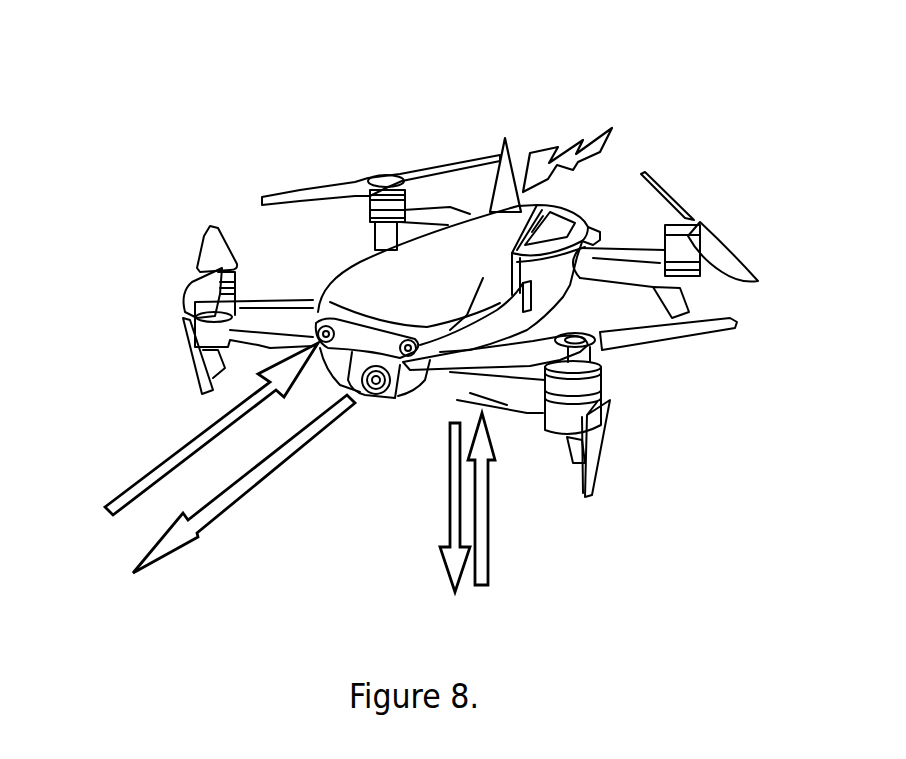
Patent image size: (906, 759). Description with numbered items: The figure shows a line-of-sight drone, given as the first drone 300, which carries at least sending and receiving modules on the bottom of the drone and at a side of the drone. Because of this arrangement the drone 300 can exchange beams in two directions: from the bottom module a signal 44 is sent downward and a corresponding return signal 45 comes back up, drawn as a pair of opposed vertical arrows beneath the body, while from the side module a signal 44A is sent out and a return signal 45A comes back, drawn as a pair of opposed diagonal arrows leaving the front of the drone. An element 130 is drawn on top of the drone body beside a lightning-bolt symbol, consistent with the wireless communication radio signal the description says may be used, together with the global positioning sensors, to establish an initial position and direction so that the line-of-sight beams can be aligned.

The first drone 300 is at (775, 53).
The antenna / wireless transceiver 130 is at (611, 128).
The return signal 45A is at (152, 465).
The signal 44A is at (230, 508).
The return signal 45 is at (435, 500).
The signal 44 is at (488, 502).